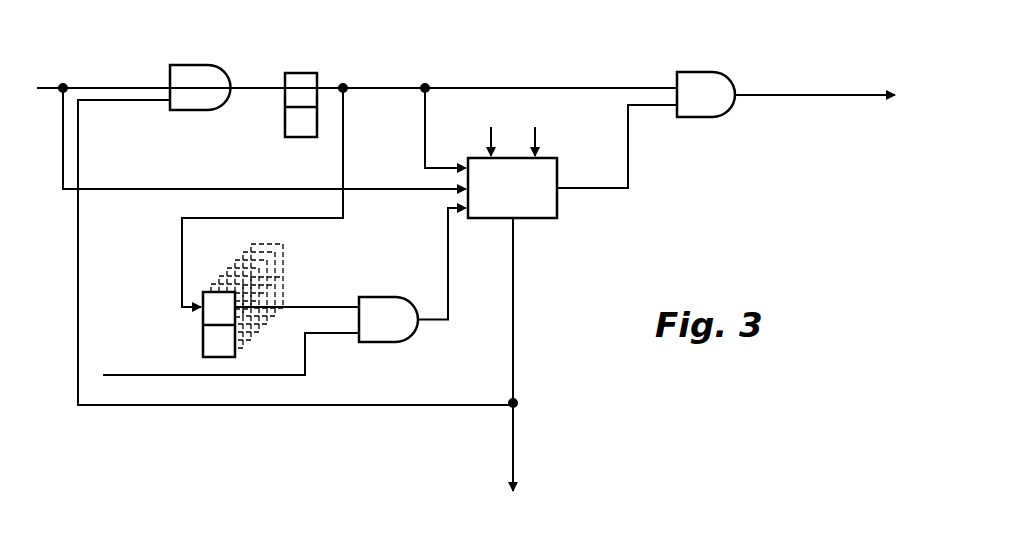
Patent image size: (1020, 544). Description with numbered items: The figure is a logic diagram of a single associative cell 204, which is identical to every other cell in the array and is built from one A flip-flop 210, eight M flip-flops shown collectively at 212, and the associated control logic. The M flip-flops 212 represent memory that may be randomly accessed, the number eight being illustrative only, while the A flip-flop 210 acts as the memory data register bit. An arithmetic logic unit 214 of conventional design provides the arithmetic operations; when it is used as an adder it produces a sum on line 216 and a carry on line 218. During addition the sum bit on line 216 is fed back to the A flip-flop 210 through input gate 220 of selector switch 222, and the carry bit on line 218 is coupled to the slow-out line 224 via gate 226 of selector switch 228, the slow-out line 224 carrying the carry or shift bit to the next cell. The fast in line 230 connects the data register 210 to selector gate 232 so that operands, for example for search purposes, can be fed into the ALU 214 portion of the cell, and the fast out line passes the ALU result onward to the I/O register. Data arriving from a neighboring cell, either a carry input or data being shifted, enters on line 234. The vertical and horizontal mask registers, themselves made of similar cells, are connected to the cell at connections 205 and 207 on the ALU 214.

The cell 204 is at (586, 314).
The connection 205 is at (483, 134).
The connection 207 is at (535, 134).
The A flip-flop 210 is at (305, 73).
The M flip-flops 212 is at (207, 290).
The arithmetic logic unit 214 is at (557, 213).
The sum output line 216 is at (513, 372).
The carry output line 218 is at (628, 176).
The input gate 220 is at (145, 102).
The selector switch 222 is at (208, 55).
The slow-out line 224 is at (800, 95).
The gate 226 is at (655, 107).
The selector switch 228 is at (713, 68).
The fast in line 230 is at (217, 375).
The selector gate 232 is at (388, 297).
The line 234 is at (93, 87).